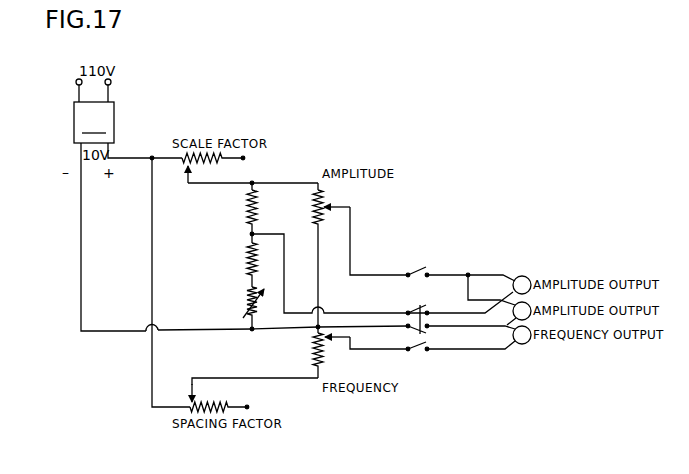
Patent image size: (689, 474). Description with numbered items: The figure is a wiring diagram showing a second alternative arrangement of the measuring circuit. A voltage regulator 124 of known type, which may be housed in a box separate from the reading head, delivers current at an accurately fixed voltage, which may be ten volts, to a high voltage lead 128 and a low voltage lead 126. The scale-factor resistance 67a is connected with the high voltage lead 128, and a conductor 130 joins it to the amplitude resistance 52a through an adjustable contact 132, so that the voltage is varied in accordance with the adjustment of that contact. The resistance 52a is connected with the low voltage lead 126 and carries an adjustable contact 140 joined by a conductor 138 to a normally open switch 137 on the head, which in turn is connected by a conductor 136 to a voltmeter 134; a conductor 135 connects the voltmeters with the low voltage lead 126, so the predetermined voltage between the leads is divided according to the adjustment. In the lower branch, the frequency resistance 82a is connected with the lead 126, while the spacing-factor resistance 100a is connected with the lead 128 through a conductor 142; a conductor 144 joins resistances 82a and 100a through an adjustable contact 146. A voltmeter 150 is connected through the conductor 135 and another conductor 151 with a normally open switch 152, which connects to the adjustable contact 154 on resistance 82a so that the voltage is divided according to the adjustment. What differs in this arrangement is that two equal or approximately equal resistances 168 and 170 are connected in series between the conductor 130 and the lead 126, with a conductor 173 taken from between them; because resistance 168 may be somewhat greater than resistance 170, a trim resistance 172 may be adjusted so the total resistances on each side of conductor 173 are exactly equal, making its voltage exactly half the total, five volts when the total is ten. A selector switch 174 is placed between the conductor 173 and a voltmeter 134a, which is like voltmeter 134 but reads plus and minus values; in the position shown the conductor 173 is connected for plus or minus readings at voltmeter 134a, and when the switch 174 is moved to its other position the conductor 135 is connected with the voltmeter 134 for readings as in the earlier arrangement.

The voltage regulator 124 is at (94, 111).
The high voltage lead 128 is at (117, 153).
The low voltage lead 126 is at (81, 249).
The conductor 142 is at (152, 285).
The resistance of potentiometer 67 67a is at (199, 163).
The adjustable contact 132 is at (185, 172).
The conductor 130 is at (227, 186).
The resistance 168 is at (246, 213).
The resistance 170 is at (246, 258).
The trim resistance 172 is at (246, 304).
The conductor 173 is at (284, 250).
The resistance of potentiometer 52 52a is at (316, 210).
The adjustable contact 140 is at (331, 202).
The conductor 138 is at (351, 262).
The normally open switch 137 is at (423, 261).
The conductor 136 is at (458, 272).
The conductor 135 is at (357, 313).
The selector switch 174 is at (418, 306).
The voltmeter 134a is at (526, 277).
The voltmeter 134 is at (505, 298).
The voltmeter 150 is at (523, 345).
The resistance of potentiometer 82 82a is at (312, 357).
The adjustable contact 154 is at (333, 336).
The normally open switch 152 is at (422, 352).
The conductor 151 is at (470, 350).
The conductor 144 is at (212, 379).
The adjustable contact 146 is at (189, 398).
The resistance of potentiometer 100 100a is at (207, 405).